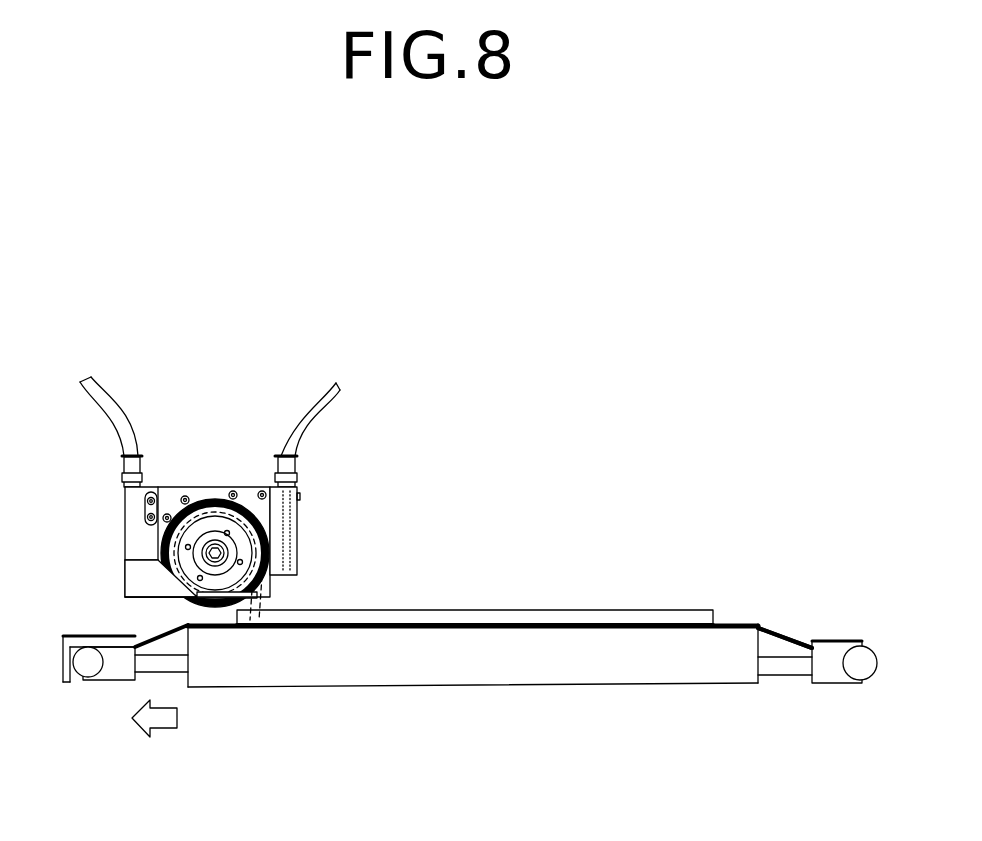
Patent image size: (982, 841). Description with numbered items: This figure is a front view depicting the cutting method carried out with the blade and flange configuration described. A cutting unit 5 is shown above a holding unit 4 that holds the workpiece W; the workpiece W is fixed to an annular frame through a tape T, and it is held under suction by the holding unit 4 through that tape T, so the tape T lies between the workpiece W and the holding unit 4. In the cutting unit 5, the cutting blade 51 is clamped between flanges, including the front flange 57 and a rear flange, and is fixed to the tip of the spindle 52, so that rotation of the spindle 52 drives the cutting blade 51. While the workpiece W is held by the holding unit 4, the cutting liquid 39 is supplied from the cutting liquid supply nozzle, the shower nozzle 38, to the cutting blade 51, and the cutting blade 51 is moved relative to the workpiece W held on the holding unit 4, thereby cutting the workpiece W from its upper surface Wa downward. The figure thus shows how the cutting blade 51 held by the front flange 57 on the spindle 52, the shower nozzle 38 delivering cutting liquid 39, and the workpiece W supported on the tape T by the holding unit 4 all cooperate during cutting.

The conveyor unit 4 is at (652, 712).
The grinding unit 5 is at (208, 493).
The shower nozzle 38 is at (277, 572).
The cutting liquid 39 is at (262, 600).
The cutting blade 51 is at (163, 553).
The spindle 52 is at (198, 497).
The front flange 57 is at (177, 543).
The workpiece W is at (617, 586).
The upper surface of workpiece Wa is at (475, 610).
The tape T is at (777, 632).